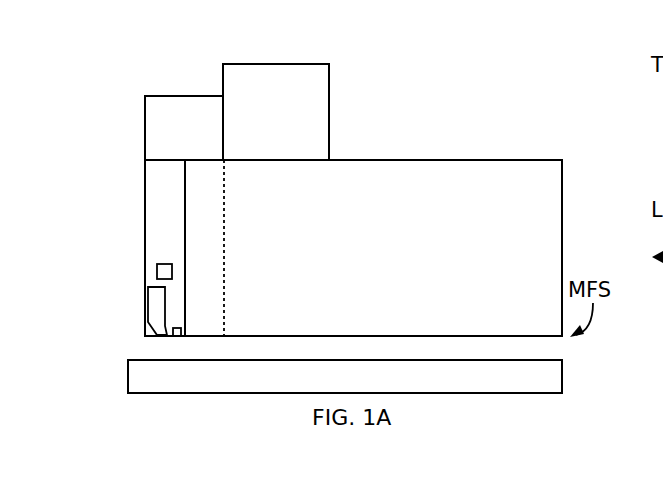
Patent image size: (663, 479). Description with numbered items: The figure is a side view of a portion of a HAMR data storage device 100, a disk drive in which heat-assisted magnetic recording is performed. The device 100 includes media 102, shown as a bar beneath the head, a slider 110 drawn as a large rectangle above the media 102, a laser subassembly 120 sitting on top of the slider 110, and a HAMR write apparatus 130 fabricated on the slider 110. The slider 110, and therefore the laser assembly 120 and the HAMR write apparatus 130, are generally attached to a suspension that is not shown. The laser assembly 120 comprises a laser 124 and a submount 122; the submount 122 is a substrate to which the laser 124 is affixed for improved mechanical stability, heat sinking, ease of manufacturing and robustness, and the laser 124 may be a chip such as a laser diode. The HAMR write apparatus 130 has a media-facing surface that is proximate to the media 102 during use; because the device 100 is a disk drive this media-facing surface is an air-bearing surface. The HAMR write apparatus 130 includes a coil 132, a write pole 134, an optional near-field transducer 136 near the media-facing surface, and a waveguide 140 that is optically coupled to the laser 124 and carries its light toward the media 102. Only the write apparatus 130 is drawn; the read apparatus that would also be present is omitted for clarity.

The HAMR data storage device 100 is at (375, 43).
The media 102 is at (128, 367).
The slider 110 is at (520, 160).
The laser subassembly 120 is at (231, 106).
The submount 122 is at (329, 105).
The laser 124 is at (185, 96).
The HAMR write apparatus 130 is at (225, 212).
The coil 132 is at (155, 265).
The write pole 134 is at (148, 287).
The near-field transducer 136 is at (178, 337).
The waveguide 140 is at (183, 232).